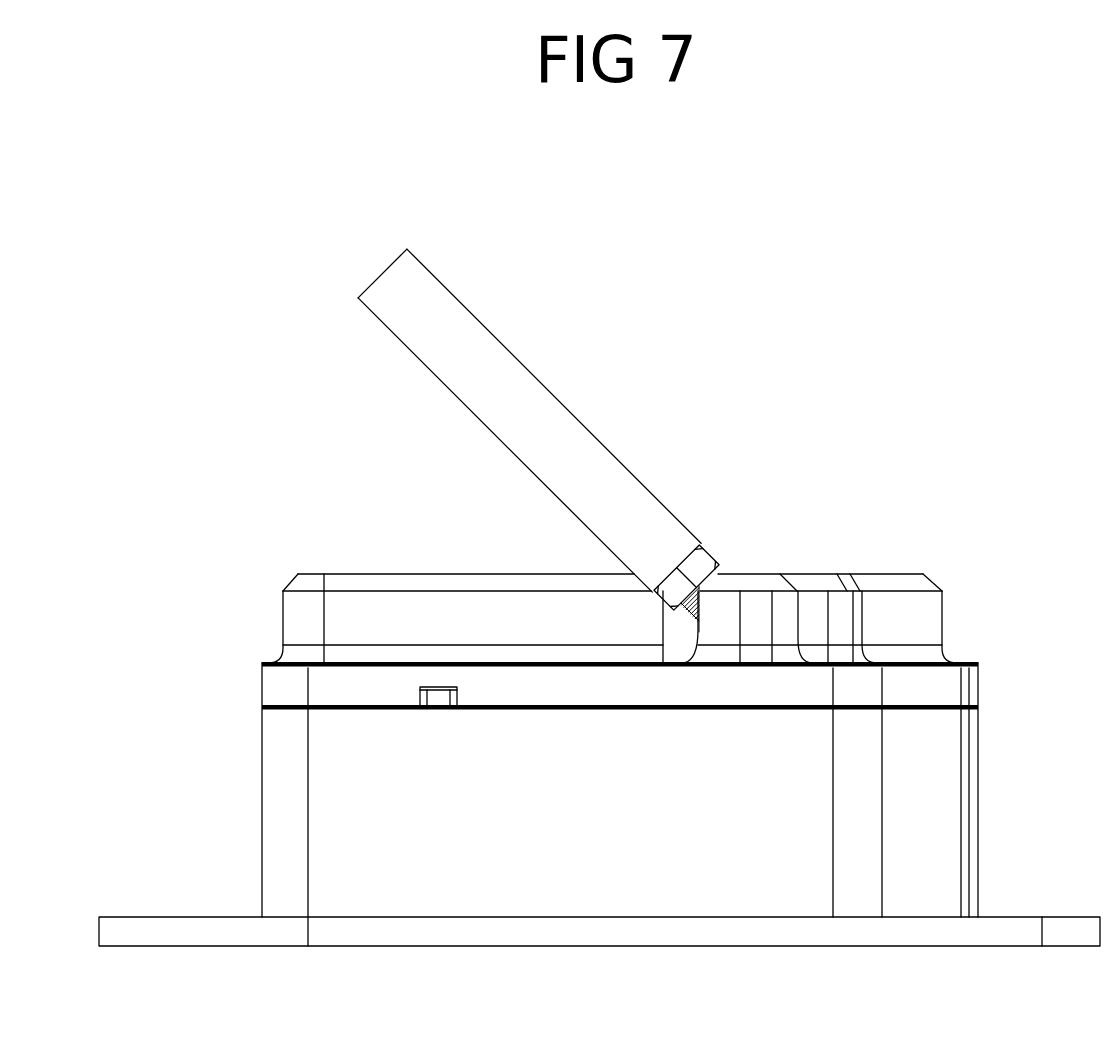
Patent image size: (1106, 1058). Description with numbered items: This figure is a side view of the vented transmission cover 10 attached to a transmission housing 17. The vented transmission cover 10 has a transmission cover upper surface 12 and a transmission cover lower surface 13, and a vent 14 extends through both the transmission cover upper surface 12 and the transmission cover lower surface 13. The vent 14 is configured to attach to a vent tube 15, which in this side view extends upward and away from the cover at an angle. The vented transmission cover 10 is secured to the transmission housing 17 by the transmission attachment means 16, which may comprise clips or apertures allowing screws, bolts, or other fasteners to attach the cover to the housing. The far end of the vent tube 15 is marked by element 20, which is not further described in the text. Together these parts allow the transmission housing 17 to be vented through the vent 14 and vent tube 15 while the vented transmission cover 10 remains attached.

The vented transmission cover 10 is at (947, 652).
The transmission cover upper surface 12 is at (863, 573).
The transmission cover lower surface 13 is at (325, 712).
The vent 14 is at (712, 553).
The vent tube 15 is at (494, 393).
The transmission attachment means 16 is at (310, 660).
The transmission housing 17 is at (980, 853).
The tube end cap 20 is at (382, 272).